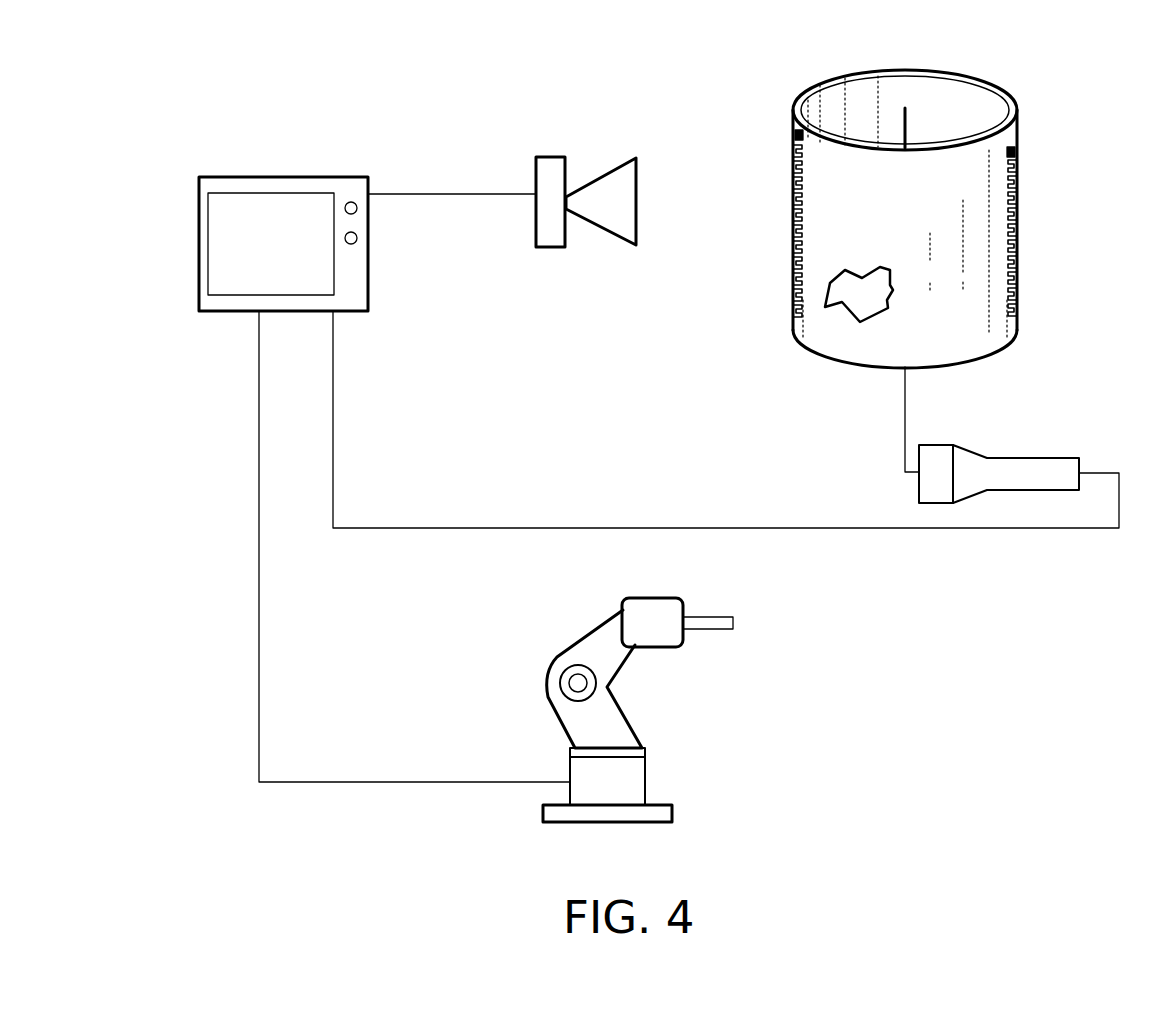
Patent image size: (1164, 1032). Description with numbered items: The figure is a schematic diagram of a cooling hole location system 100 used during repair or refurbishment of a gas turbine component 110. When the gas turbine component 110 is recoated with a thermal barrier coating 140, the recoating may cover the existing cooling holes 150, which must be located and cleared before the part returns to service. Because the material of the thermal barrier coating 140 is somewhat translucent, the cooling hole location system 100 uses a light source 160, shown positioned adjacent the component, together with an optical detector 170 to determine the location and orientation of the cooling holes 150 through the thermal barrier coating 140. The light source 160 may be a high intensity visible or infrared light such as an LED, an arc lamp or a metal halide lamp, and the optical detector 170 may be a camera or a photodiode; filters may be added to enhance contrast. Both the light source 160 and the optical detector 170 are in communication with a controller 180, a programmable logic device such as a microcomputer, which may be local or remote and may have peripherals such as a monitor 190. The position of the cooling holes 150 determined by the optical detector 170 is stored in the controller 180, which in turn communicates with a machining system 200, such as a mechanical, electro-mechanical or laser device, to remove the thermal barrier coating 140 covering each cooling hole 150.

The cooling hole location system 100 is at (275, 72).
The gas turbine component 110 is at (1024, 112).
The thermal barrier coating 140 is at (850, 298).
The cooling holes 150 is at (1018, 197).
The light source 160 is at (1028, 494).
The optical detector 170 is at (592, 177).
The controller 180 is at (263, 254).
The monitor 190 is at (298, 205).
The machining system 200 is at (592, 822).